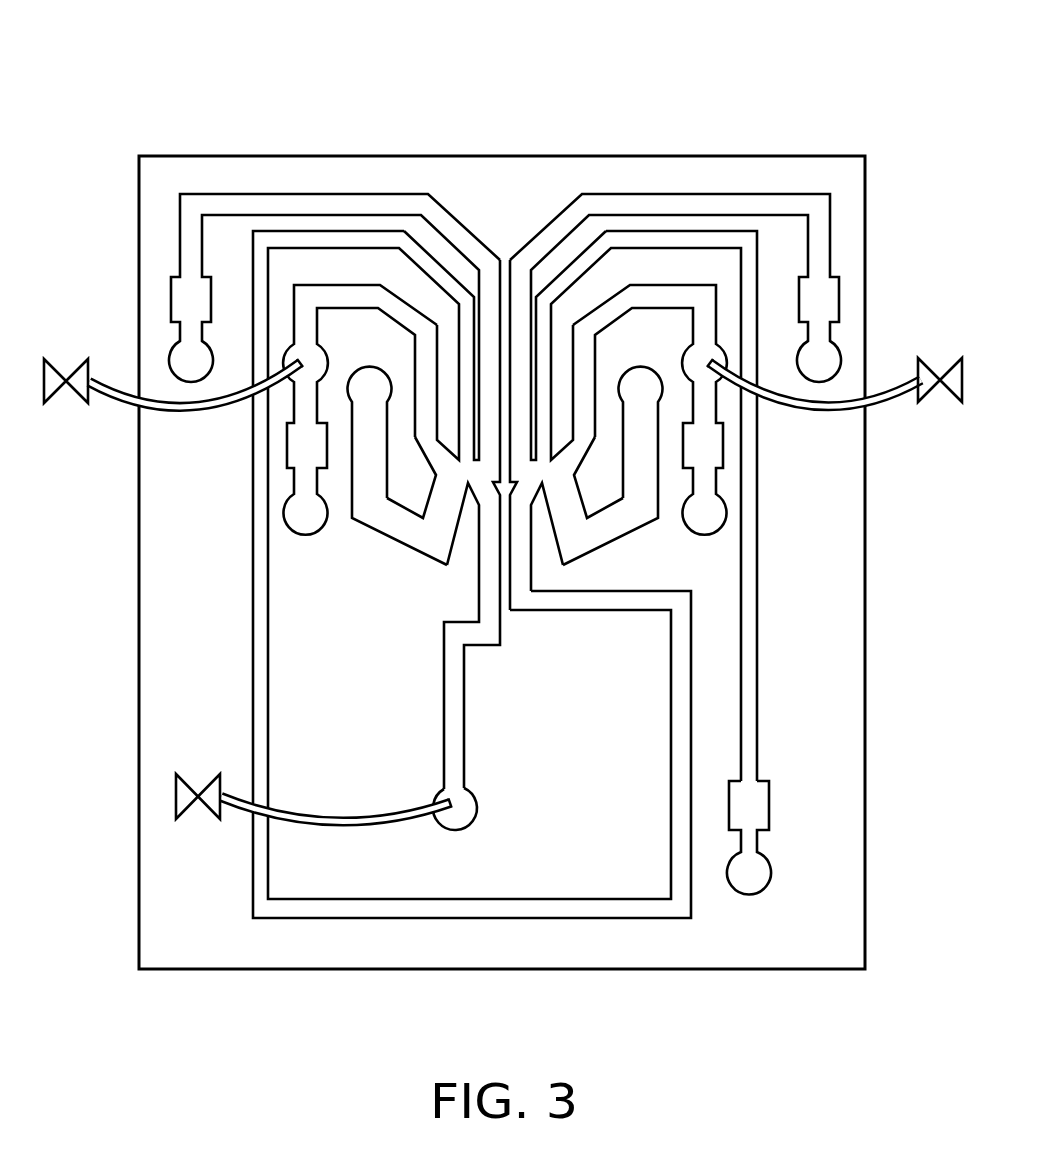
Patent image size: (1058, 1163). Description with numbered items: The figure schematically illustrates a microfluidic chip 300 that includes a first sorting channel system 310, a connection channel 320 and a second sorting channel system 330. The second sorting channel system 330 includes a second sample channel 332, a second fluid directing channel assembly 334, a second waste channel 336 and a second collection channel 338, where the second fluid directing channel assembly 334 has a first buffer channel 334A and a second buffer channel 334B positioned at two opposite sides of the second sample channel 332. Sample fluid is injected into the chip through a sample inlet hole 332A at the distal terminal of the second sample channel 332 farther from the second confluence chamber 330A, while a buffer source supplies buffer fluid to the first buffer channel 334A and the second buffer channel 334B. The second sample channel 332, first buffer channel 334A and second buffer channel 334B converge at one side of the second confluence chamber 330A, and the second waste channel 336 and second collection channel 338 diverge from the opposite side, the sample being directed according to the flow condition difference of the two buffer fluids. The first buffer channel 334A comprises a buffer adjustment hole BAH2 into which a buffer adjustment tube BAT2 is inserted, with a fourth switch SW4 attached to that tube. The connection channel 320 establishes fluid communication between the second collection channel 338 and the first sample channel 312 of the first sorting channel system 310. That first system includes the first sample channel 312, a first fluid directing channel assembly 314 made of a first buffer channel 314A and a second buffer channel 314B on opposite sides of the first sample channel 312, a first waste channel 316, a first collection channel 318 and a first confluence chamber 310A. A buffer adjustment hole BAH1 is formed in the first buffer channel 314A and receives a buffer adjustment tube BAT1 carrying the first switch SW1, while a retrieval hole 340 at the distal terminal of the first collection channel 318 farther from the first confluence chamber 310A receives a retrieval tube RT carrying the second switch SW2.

The microfluidic chip 300 is at (865, 937).
The first sorting channel system 310 is at (296, 394).
The first confluence chamber 310A is at (424, 482).
The first sample channel 312 is at (400, 230).
The first fluid directing channel assembly 314 is at (334, 291).
The first buffer channel 314A is at (288, 345).
The second buffer channel 314B is at (358, 192).
The first waste channel 316 is at (388, 427).
The first collection channel 318 is at (475, 530).
The connection channel 320 is at (518, 919).
The second sorting channel system 330 is at (724, 447).
The second confluence chamber 330A is at (588, 482).
The second sample channel 332 is at (679, 232).
The sample inlet hole 332A is at (784, 878).
The second fluid directing channel assembly 334 is at (688, 291).
The first buffer channel 334A is at (727, 350).
The second buffer channel 334B is at (797, 192).
The second waste channel 336 is at (660, 412).
The second collection channel 338 is at (532, 532).
The retrieval hole 340 is at (463, 843).
The buffer adjustment hole BAH1 is at (280, 337).
The buffer adjustment hole BAH2 is at (722, 337).
The buffer adjustment tube BAT1 is at (118, 383).
The buffer adjustment tube BAT2 is at (890, 392).
The retrieval tube RT is at (317, 829).
The first switch SW1 is at (72, 393).
The second switch SW2 is at (186, 815).
The fourth switch SW4 is at (948, 402).